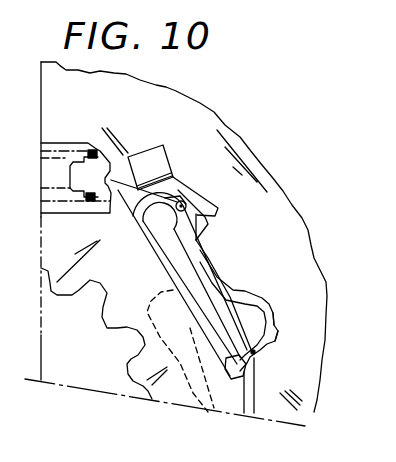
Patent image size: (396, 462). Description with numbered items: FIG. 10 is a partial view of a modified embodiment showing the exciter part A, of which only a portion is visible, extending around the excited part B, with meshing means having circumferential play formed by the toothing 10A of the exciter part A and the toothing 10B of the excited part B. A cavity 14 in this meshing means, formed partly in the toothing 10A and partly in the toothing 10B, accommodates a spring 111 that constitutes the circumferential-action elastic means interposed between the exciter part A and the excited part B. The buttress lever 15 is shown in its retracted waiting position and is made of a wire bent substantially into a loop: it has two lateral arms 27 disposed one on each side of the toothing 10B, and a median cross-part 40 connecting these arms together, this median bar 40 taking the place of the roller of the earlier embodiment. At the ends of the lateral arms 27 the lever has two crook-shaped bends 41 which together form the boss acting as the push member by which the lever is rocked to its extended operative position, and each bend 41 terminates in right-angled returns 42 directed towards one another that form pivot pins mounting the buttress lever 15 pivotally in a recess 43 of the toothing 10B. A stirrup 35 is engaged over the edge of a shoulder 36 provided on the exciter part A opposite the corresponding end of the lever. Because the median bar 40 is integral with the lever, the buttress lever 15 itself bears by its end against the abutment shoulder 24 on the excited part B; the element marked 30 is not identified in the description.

The cavity 14 is at (53, 158).
The spring 111 is at (89, 148).
The stirrup 35 is at (153, 147).
The shoulder 36 is at (176, 185).
The recess 43 is at (190, 199).
The right-angled returns 42 is at (207, 213).
The toothing of the excited part 10B is at (210, 233).
The crook-shaped bends 41 is at (135, 210).
The buttress lever 15 is at (190, 268).
The lateral arms 27 is at (166, 254).
The toothing of the exciter part 10A is at (253, 290).
The pin 30 is at (252, 350).
The excited part B is at (274, 323).
The abutment shoulder 24 is at (273, 340).
The median cross-part 40 is at (250, 371).
The exciter part A is at (326, 347).